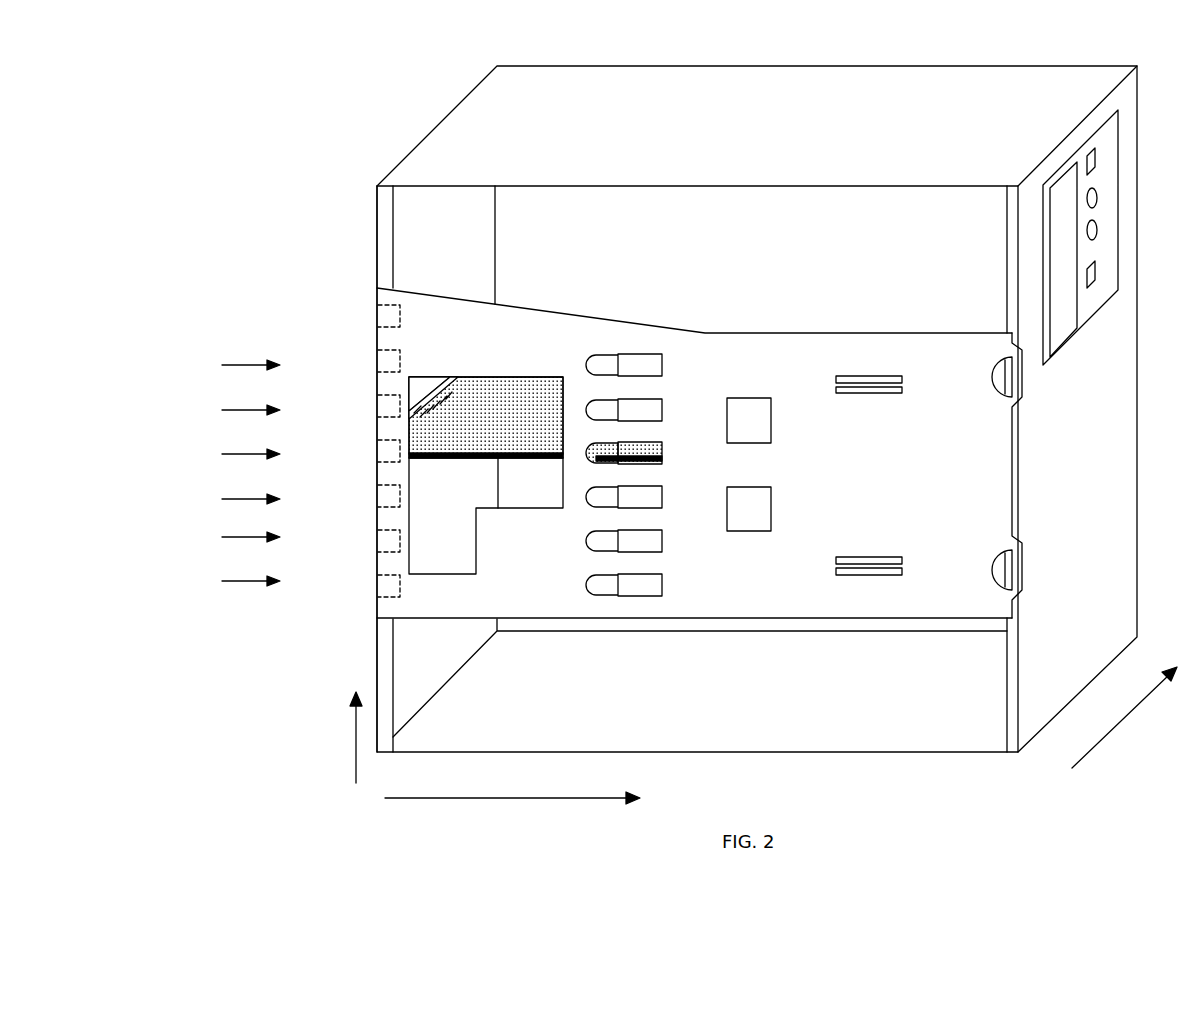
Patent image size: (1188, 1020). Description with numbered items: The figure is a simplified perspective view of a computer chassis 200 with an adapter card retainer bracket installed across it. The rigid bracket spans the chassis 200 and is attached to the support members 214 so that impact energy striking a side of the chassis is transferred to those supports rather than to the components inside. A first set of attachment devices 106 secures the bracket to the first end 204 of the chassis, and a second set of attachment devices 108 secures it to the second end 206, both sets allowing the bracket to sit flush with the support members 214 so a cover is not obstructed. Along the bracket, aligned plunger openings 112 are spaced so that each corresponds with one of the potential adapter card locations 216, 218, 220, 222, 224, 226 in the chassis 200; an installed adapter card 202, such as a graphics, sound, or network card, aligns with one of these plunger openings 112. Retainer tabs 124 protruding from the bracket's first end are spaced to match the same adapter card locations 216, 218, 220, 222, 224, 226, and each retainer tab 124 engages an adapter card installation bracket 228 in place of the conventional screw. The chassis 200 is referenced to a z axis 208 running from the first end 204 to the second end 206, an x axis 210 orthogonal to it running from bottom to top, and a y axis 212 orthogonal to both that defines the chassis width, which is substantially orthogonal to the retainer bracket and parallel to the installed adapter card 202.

The computer chassis 200 is at (340, 178).
The first set of attachment devices 106 is at (377, 288).
The second set of attachment devices 108 is at (1023, 383).
The plunger openings 112 is at (662, 447).
The retainer tabs 124 is at (382, 368).
The adapter card 202 is at (447, 438).
The first end of the chassis 204 is at (378, 648).
The second end of the chassis 206 is at (1018, 687).
The z axis 208 is at (473, 798).
The x axis 210 is at (355, 737).
The y axis 212 is at (1125, 722).
The support members 214 is at (387, 268).
The potential adapter card location 216 is at (228, 365).
The potential adapter card location 218 is at (228, 410).
The potential adapter card location 220 is at (228, 454).
The potential adapter card location 222 is at (228, 499).
The potential adapter card location 224 is at (228, 537).
The potential adapter card location 226 is at (228, 581).
The adapter card installation bracket 228 is at (409, 410).